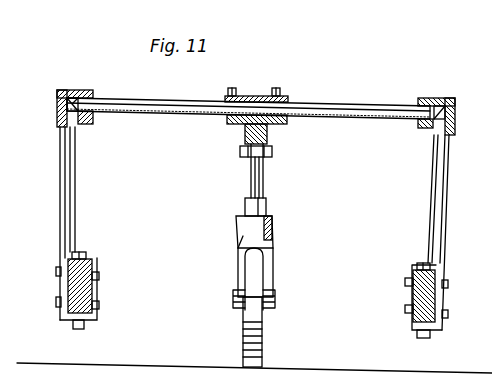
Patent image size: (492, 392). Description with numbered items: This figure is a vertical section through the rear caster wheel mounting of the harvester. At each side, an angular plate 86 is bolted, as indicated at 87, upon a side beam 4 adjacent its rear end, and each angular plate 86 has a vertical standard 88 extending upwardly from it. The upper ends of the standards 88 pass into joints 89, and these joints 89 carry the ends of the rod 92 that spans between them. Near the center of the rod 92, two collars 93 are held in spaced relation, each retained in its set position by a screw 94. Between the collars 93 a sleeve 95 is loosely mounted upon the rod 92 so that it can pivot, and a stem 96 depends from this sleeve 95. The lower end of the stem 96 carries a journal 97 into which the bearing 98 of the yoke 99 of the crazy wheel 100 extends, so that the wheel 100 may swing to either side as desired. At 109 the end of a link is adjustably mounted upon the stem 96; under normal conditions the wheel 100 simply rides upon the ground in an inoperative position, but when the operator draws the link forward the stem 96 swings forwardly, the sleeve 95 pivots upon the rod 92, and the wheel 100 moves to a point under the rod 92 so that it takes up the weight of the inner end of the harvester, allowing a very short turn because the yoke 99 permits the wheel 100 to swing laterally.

The side beam 4 is at (90, 259).
The angular plate 86 is at (62, 286).
The bolt 87 is at (99, 275).
The vertical standard 88 is at (62, 173).
The joint 89 is at (72, 92).
The rod 92 is at (383, 95).
The collar 93 is at (228, 118).
The screw 94 is at (230, 90).
The sleeve 95 is at (256, 94).
The stem 96 is at (251, 180).
The journal 97 is at (273, 223).
The bearing 98 is at (266, 207).
The yoke 99 is at (263, 253).
The crazy wheel 100 is at (262, 326).
The adjustable link mounting 109 is at (274, 153).